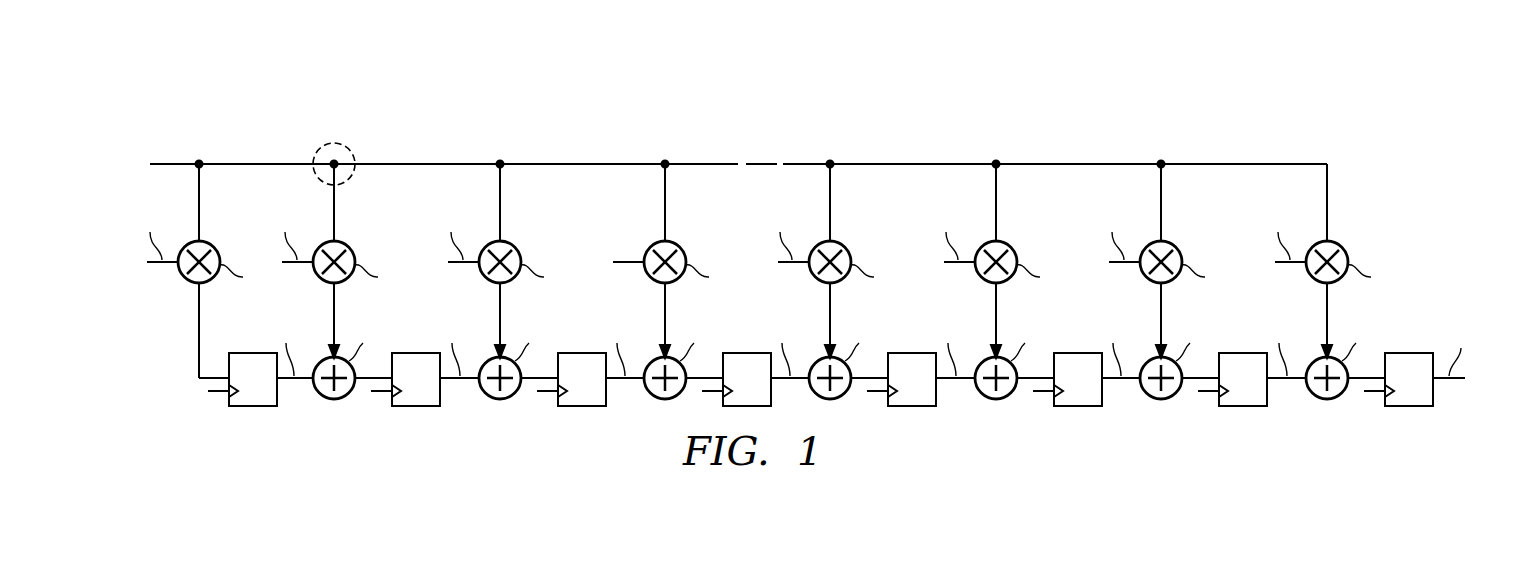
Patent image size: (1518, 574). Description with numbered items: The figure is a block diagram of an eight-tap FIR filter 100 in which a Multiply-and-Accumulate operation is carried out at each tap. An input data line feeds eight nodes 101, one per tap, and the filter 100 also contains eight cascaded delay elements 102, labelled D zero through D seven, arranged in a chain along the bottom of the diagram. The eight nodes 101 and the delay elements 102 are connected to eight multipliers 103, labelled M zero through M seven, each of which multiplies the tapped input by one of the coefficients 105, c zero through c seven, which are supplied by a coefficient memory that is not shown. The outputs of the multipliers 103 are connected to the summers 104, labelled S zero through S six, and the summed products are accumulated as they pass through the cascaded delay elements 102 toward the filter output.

The FIR filter 100 is at (524, 104).
The nodes 101 is at (328, 143).
The delay elements 102 is at (253, 406).
The multipliers 103 is at (185, 282).
The summers 104 is at (500, 399).
The coefficients 105 is at (630, 260).